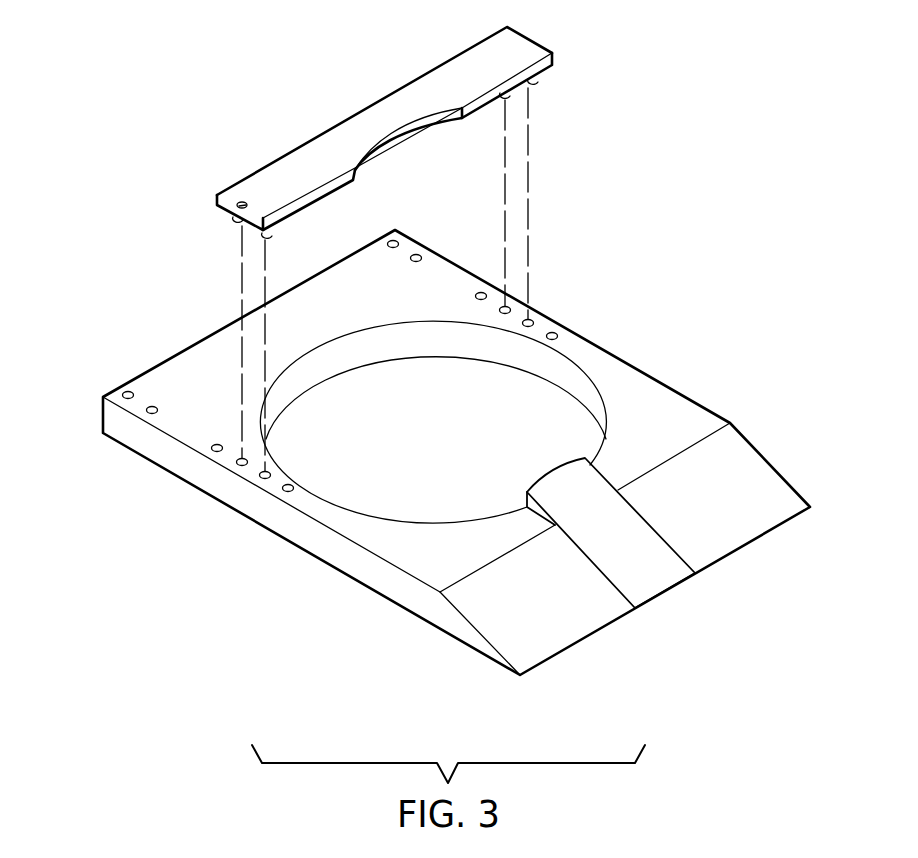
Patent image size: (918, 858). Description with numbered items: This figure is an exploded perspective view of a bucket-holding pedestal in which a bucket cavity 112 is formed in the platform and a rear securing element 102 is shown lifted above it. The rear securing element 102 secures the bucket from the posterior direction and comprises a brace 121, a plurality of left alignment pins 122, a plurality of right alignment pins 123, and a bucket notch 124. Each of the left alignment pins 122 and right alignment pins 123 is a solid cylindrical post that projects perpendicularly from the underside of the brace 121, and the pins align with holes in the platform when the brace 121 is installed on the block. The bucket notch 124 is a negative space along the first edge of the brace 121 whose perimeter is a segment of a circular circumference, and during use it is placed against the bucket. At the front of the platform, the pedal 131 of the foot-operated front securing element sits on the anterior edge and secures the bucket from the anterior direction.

The rear securing element 102 is at (203, 118).
The bucket cavity 112 is at (570, 412).
The brace 121 is at (403, 100).
The left alignment pins 122 is at (262, 233).
The right alignment pins 123 is at (530, 86).
The bucket notch 124 is at (407, 133).
The pedal 131 is at (648, 577).